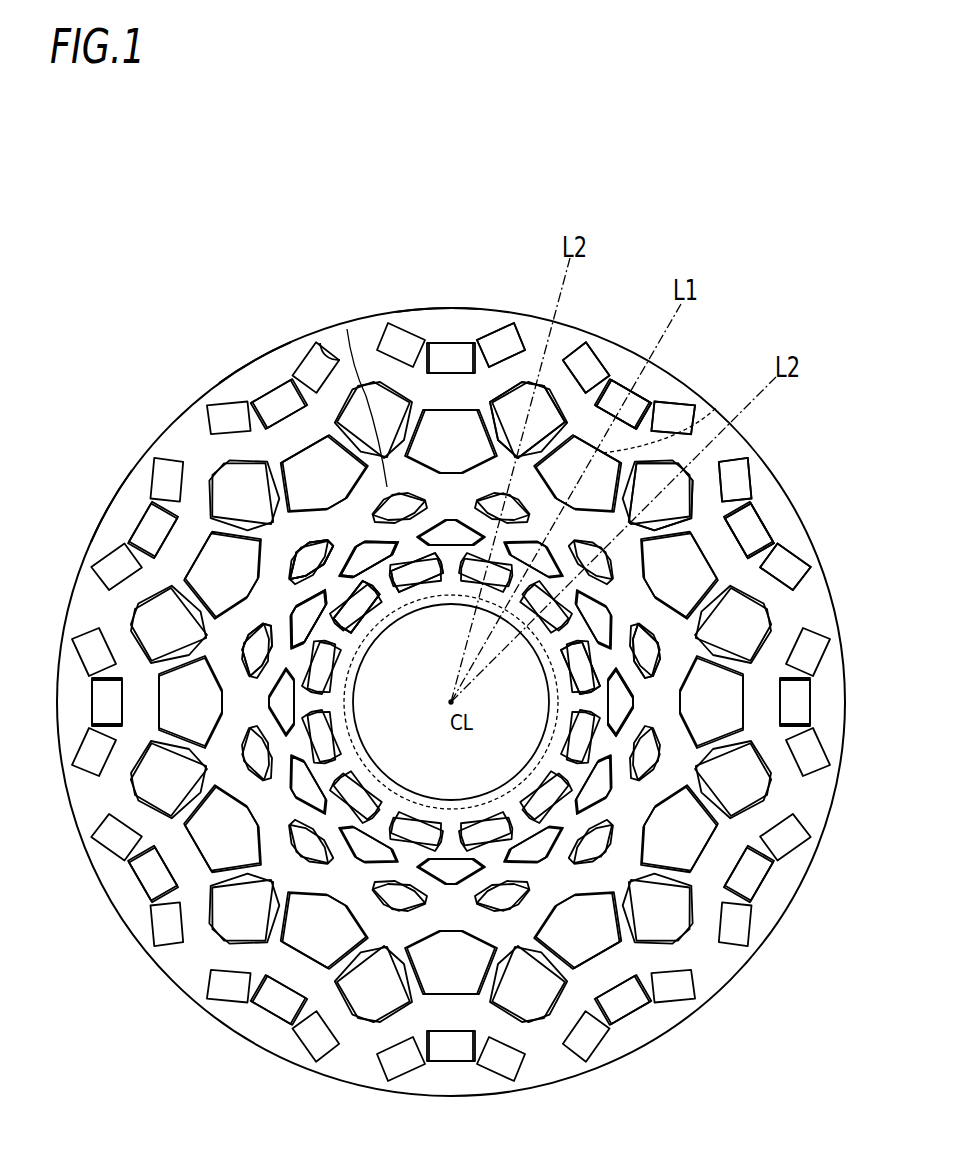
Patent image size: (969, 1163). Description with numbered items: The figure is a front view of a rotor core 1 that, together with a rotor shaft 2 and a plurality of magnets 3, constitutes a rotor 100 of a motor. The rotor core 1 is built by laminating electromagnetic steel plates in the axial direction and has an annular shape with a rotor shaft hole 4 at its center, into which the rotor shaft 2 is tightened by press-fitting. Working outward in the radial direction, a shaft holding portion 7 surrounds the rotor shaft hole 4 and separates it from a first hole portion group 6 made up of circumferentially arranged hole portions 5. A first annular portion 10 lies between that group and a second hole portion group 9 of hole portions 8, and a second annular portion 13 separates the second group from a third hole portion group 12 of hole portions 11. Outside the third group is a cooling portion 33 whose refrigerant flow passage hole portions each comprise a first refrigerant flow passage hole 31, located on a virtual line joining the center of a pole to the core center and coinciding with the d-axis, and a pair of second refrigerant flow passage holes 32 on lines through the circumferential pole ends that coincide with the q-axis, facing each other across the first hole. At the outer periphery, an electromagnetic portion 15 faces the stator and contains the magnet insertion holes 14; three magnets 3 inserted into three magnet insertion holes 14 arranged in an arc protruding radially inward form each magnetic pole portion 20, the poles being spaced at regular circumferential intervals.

The rotor 100 is at (704, 213).
The rotor core 1 is at (177, 416).
The rotor shaft 2 is at (510, 788).
The magnet 3 is at (593, 353).
The rotor shaft hole 4 is at (373, 636).
The hole portion 5 is at (593, 666).
The first hole portion group 6 is at (329, 635).
The shaft holding portion 7 is at (351, 643).
The hole portion 8 is at (633, 707).
The second hole portion group 9 is at (286, 653).
The first annular portion 10 is at (376, 578).
The hole portion 11 is at (640, 623).
The third hole portion group 12 is at (331, 533).
The second annular portion 13 is at (294, 596).
The magnet insertion hole 14 is at (798, 517).
The electromagnetic portion 15 is at (318, 340).
The magnetic pole portion 20 is at (120, 513).
The first refrigerant flow passage hole 31 is at (503, 332).
The second refrigerant flow passage hole 32 is at (540, 380).
The cooling portion 33 is at (367, 428).